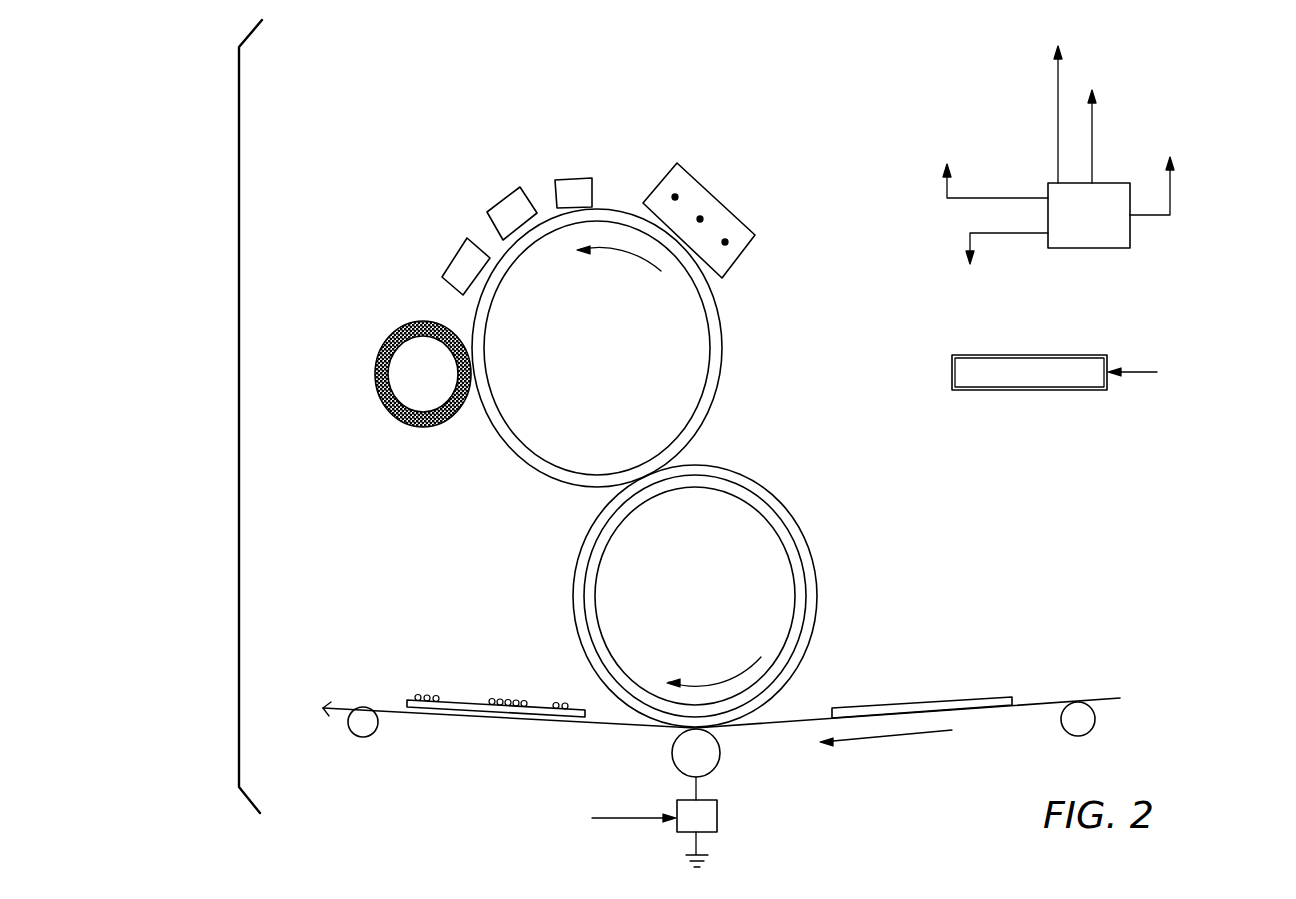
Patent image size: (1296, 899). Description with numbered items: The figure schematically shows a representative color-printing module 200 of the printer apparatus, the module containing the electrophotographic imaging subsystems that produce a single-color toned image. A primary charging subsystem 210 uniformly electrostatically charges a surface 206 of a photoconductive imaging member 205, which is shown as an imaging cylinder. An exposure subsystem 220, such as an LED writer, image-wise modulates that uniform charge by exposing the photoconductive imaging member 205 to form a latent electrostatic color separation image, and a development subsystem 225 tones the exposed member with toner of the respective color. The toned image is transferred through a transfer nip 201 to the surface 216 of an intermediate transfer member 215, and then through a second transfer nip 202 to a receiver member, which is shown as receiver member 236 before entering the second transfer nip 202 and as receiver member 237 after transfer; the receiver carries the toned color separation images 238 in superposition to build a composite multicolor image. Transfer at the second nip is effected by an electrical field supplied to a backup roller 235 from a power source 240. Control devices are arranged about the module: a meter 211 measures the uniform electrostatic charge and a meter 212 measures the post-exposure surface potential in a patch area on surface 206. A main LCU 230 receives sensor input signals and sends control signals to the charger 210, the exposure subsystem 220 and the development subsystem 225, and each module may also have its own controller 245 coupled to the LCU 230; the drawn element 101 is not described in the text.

The module 200 is at (815, 113).
The transfer nip 201 is at (608, 493).
The second transfer nip 202 is at (757, 718).
The photoconductive imaging member 205 is at (740, 370).
The surface 206 is at (708, 418).
The primary charging subsystem 210 is at (730, 190).
The meter 211 is at (565, 172).
The meter 212 is at (463, 243).
The intermediate transfer member 215 is at (826, 593).
The surface 216 is at (790, 515).
The exposure subsystem 220 is at (500, 198).
The development subsystem 225 is at (374, 373).
The main LCU 230 is at (1130, 228).
The backup roller 235 is at (672, 762).
The receiver member 236 is at (958, 698).
The receiver member 237 is at (460, 699).
The toned color separation images 238 is at (515, 700).
The power source 240 is at (737, 815).
The controller 245 is at (997, 355).
The receiver sheet / web 101 is at (343, 706).